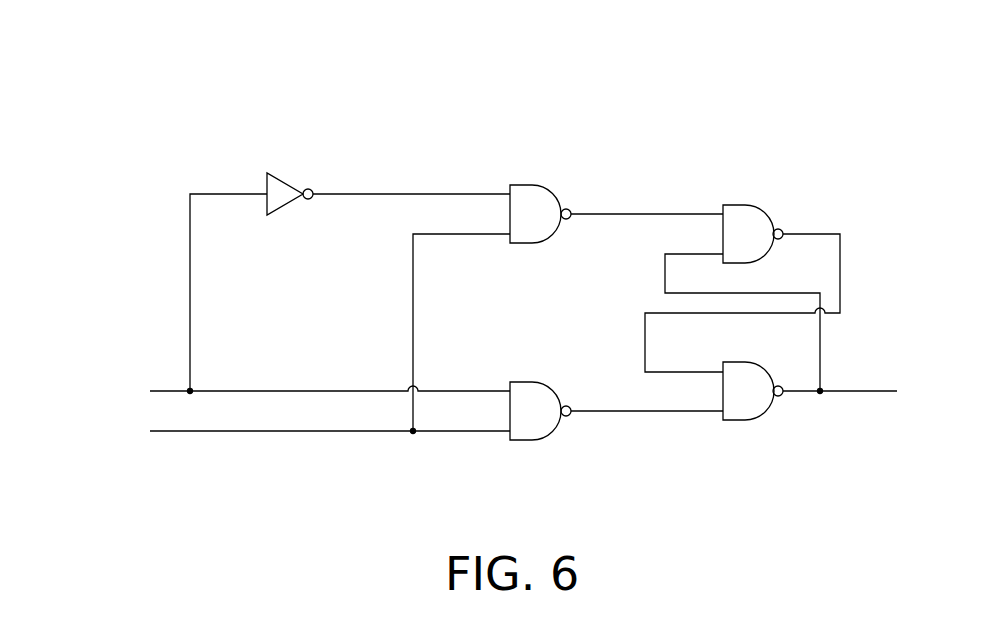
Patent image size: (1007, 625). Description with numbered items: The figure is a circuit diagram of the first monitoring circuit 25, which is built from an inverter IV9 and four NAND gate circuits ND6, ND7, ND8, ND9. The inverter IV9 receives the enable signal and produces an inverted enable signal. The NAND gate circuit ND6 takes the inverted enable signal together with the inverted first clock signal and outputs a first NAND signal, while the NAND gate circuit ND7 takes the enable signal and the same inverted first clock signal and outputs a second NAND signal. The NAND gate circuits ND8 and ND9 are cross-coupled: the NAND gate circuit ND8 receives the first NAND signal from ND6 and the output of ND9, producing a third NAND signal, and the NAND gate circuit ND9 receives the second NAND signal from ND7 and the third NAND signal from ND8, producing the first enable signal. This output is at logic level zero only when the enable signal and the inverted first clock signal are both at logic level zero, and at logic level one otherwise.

The first monitoring circuit 25 is at (934, 60).
The inverter IV9 is at (291, 179).
The NAND gate circuit ND6 is at (541, 187).
The NAND gate circuit ND7 is at (541, 384).
The NAND gate circuit ND8 is at (756, 207).
The NAND gate circuit ND9 is at (756, 366).